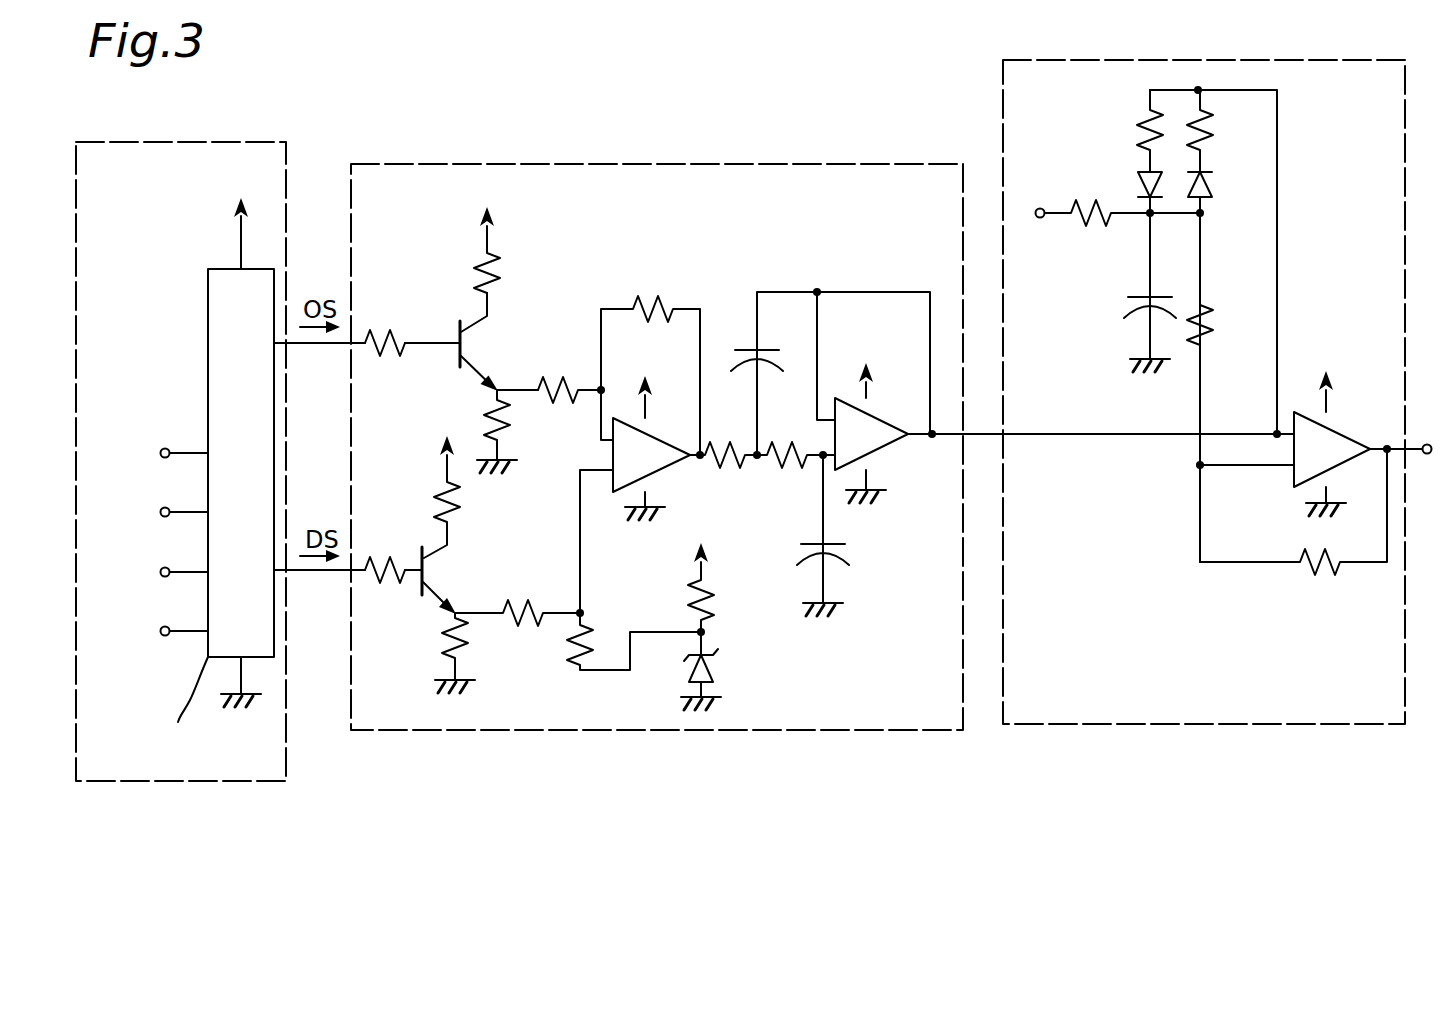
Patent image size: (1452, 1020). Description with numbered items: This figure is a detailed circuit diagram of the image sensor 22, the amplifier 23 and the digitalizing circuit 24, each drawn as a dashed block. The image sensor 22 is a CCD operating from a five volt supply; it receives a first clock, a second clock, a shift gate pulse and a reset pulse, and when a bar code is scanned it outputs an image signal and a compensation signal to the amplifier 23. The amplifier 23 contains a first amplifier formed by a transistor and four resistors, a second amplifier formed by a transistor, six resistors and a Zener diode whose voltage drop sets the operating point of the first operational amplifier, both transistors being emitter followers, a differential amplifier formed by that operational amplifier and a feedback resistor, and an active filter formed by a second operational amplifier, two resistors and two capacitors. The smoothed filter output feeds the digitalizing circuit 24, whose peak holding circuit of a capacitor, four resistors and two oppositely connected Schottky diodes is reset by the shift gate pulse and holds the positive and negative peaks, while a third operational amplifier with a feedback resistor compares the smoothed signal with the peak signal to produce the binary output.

The image sensor 22 is at (197, 141).
The amplifier 23 is at (625, 165).
The digitalizing circuit 24 is at (1160, 58).